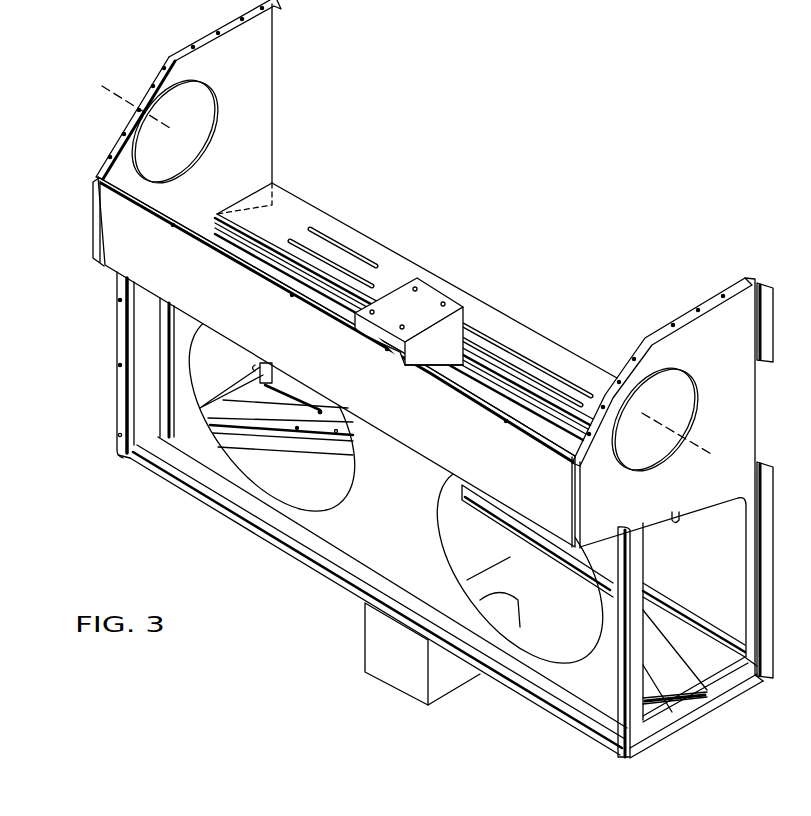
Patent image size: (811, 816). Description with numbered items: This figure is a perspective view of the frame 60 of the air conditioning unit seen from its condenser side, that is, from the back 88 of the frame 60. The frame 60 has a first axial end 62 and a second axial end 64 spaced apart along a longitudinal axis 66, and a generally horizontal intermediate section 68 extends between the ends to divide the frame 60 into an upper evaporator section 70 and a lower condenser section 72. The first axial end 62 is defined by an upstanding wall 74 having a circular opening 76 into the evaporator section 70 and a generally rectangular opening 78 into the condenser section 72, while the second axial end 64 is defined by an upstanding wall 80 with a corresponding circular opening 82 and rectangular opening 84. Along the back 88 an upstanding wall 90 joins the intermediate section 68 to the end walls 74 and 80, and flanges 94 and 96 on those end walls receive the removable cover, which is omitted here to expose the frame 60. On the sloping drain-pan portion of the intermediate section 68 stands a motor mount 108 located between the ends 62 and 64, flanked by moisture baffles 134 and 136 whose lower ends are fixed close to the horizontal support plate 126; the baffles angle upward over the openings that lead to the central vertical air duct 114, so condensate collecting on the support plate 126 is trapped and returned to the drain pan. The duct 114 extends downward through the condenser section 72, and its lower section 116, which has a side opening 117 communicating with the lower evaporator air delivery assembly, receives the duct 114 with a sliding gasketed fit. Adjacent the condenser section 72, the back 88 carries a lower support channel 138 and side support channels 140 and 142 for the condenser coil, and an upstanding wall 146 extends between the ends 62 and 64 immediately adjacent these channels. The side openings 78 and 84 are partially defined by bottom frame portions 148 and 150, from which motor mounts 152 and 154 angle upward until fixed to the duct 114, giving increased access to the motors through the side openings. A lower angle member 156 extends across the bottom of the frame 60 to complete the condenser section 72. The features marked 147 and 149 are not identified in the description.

The frame 60 is at (293, 657).
The first axial end 62 is at (746, 420).
The second axial end 64 is at (86, 222).
The longitudinal axis 66 is at (113, 90).
The intermediate section 68 is at (400, 263).
The evaporator section 70 is at (258, 103).
The condenser section 72 is at (732, 580).
The upstanding wall 74 is at (752, 385).
The circular opening 76 is at (677, 368).
The rectangular opening 78 is at (675, 511).
The upstanding wall 80 is at (262, 46).
The circular opening 82 is at (203, 83).
The rectangular opening 84 is at (252, 367).
The back 88 is at (176, 513).
The upstanding wall 90 is at (133, 264).
The flange 94 is at (648, 340).
The flange 96 is at (162, 72).
The motor mount 108 is at (432, 292).
The air duct 114 is at (364, 647).
The lower section of duct 116 is at (452, 676).
The opening 117 is at (479, 582).
The horizontal support plate 126 is at (272, 182).
The moisture baffle 134 is at (180, 203).
The moisture baffle 136 is at (420, 364).
The lower support channel 138 is at (295, 540).
The side support channel 140 is at (142, 386).
The side support channel 142 is at (585, 715).
The upstanding wall 146 is at (368, 550).
The left front opening 147 is at (342, 492).
The bottom frame portion 148 is at (726, 692).
The right front opening 149 is at (448, 513).
The bottom frame portion 150 is at (232, 392).
The motor mount 152 is at (678, 667).
The motor mount 154 is at (278, 455).
The lower angle member 156 is at (666, 596).